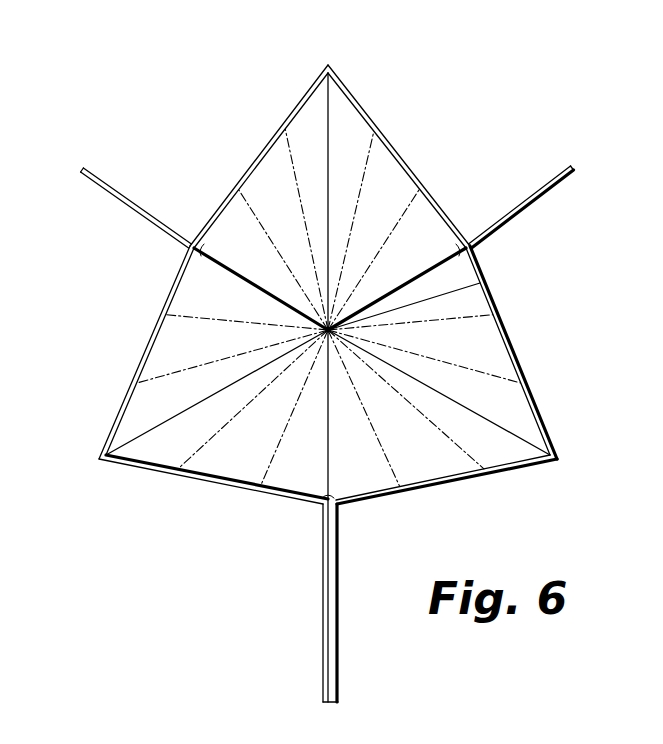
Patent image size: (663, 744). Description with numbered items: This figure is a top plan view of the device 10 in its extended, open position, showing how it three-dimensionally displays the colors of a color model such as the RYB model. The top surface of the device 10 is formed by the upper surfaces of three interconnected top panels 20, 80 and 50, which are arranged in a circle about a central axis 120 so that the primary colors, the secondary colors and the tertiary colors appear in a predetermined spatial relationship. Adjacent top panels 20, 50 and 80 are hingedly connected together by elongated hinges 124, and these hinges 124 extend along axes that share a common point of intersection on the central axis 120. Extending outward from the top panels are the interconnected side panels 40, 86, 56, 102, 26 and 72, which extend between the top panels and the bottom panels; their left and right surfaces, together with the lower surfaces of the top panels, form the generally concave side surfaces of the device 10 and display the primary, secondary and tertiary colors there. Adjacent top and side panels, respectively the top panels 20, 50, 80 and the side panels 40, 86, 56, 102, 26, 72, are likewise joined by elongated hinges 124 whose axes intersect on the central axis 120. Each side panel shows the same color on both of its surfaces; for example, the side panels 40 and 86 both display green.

The device 10 is at (518, 53).
The top panel 20 is at (399, 148).
The side panel 26 is at (84, 167).
The side panel 40 is at (570, 165).
The top panel 50 is at (208, 488).
The side panel 56 is at (322, 689).
The side panel 72 is at (85, 181).
The top panel 80 is at (553, 433).
The side panel 86 is at (576, 184).
The side panel 102 is at (340, 703).
The central axis 120 is at (480, 283).
The elongated hinges 124 is at (212, 250).